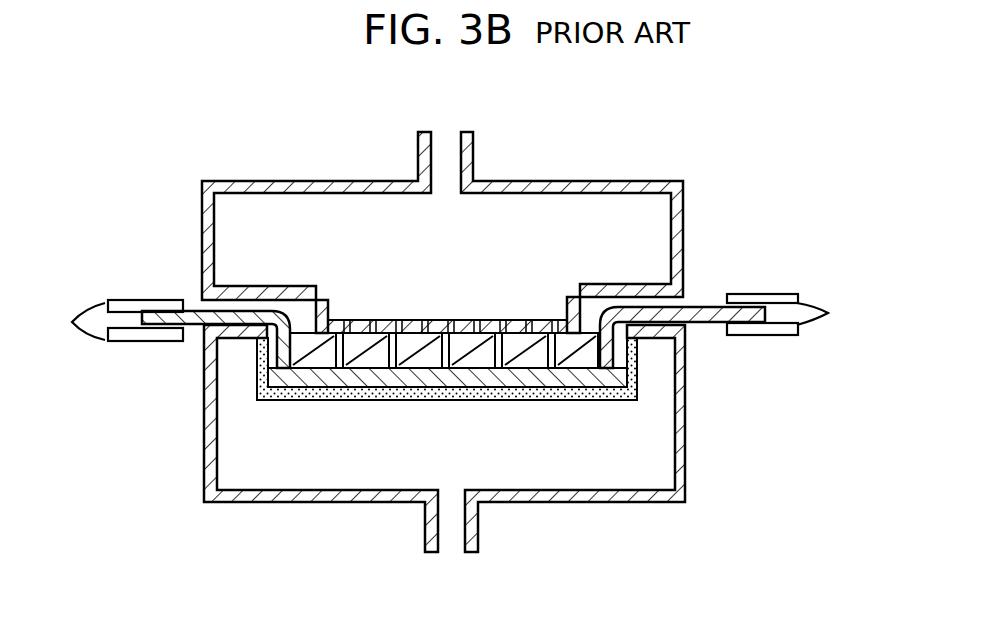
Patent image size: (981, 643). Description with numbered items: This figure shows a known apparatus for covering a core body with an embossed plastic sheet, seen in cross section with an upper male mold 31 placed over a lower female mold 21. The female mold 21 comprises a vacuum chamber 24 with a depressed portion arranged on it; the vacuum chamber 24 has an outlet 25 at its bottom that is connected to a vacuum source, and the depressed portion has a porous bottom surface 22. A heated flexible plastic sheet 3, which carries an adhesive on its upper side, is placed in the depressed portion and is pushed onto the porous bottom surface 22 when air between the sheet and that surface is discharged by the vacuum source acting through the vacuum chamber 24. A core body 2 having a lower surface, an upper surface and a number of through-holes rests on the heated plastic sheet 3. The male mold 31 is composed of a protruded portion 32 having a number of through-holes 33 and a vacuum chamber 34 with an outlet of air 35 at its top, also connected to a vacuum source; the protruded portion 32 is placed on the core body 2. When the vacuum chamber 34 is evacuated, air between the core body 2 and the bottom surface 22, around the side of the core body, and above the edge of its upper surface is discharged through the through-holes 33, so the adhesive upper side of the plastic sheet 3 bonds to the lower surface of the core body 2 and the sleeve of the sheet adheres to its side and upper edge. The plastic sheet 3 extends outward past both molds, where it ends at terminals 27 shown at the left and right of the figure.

The core body 2 is at (308, 360).
The heated flexible plastic sheet 3 is at (705, 316).
The female mold 21 is at (686, 468).
The porous bottom surface 22 is at (641, 378).
The vacuum chamber 24 is at (622, 452).
The outlet 25 is at (450, 535).
The terminal 27 is at (452, 317).
The male mold 31 is at (662, 178).
The protruded portion 32 is at (557, 333).
The through-holes 33 is at (331, 318).
The vacuum chamber 34 is at (552, 207).
The outlet of air 35 is at (448, 138).